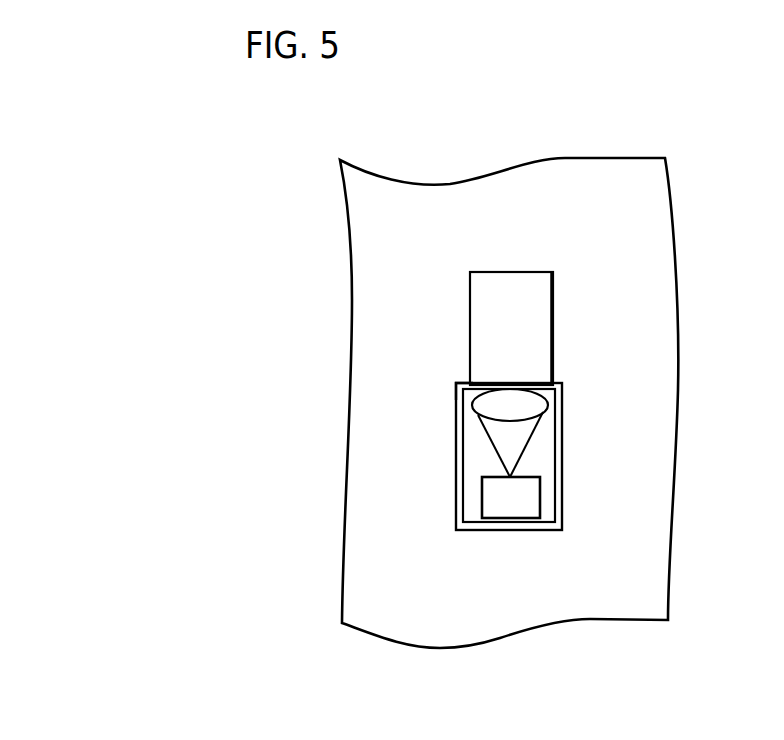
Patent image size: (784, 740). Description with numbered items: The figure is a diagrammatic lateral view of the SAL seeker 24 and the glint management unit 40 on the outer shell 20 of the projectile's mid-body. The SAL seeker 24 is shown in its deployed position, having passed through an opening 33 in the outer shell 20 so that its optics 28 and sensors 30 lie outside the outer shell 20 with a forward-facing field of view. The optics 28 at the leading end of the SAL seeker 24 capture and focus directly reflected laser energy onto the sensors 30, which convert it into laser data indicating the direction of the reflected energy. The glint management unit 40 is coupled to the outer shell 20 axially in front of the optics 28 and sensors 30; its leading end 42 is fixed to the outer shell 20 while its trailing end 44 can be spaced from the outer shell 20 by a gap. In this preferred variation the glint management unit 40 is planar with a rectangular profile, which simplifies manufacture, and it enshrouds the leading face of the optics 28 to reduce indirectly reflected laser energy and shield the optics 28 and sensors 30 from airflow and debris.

The outer shell 20 is at (422, 594).
The SAL seeker 24 is at (562, 450).
The optics 28 is at (528, 407).
The sensors 30 is at (527, 502).
The opening 33 is at (457, 385).
The glint management unit 40 is at (525, 337).
The leading end 42 is at (553, 288).
The trailing end 44 is at (554, 365).